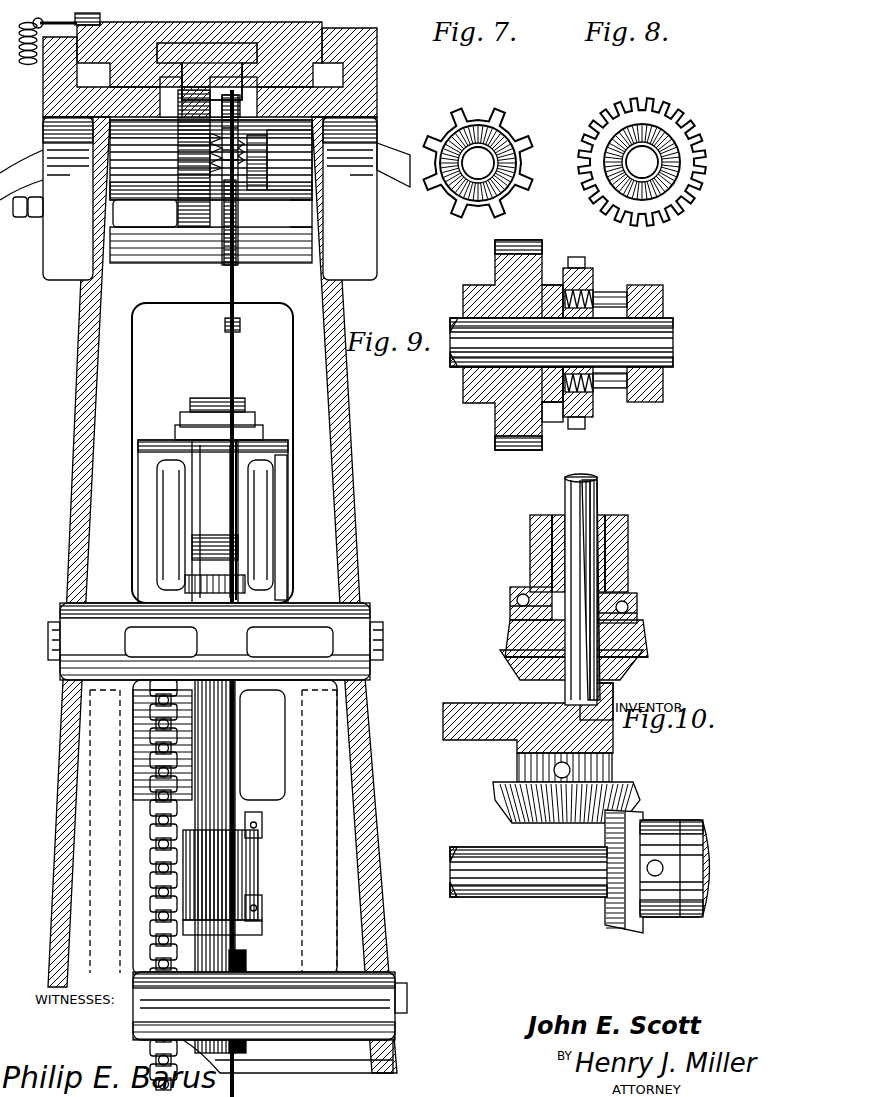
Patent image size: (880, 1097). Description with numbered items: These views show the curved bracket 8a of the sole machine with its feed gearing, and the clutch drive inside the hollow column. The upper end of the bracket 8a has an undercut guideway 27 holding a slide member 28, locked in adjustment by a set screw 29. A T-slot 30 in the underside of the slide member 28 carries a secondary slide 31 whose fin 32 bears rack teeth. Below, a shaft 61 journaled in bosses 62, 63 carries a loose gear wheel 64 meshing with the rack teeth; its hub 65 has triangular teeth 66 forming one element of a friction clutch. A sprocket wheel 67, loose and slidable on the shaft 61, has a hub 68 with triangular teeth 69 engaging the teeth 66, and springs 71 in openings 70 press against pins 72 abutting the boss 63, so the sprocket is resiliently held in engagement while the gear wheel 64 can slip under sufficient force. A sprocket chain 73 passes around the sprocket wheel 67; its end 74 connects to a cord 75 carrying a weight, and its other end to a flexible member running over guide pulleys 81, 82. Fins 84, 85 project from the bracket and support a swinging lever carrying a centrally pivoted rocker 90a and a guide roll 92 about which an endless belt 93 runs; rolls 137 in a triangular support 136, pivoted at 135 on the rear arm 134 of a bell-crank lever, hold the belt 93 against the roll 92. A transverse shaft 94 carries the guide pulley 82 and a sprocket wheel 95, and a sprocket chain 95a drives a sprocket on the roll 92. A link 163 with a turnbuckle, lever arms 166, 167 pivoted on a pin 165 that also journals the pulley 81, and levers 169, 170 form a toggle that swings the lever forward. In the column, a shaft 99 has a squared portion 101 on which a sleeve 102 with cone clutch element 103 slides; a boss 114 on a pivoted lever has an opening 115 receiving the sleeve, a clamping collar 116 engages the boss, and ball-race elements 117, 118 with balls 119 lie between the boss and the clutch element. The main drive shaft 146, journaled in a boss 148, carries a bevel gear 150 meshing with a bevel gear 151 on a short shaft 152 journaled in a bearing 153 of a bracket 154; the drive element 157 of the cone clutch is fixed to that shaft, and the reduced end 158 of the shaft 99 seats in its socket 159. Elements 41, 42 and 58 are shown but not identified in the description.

In FIG. 6, the bracket 8a is at (80, 407).
In FIG. 6, the channel or guideway 27 is at (343, 74).
In FIG. 6, the slide member 28 is at (322, 21).
In FIG. 6, the set screw 29 is at (27, 206).
In FIG. 6, the T-slot 30 is at (248, 63).
In FIG. 6, the secondary slide 31 is at (213, 47).
In FIG. 6, the fin 32 is at (90, 13).
In FIG. 6, the knife blade 41 is at (398, 153).
In FIG. 6, the guard 42 is at (18, 160).
In FIG. 6, the spring 58 is at (25, 19).
In FIG. 6, the shaft 61 is at (60, 143).
In FIG. 9, the shaft 61 is at (673, 349).
In FIG. 6, the boss 62 is at (133, 198).
In FIG. 6, the boss 63 is at (297, 195).
In FIG. 9, the boss 63 is at (665, 306).
In FIG. 6, the gear wheel 64 is at (182, 142).
In FIG. 8, the gear wheel 64 is at (648, 97).
In FIG. 9, the gear wheel 64 is at (495, 268).
In FIG. 6, the hub 65 is at (210, 153).
In FIG. 8, the hub 65 is at (688, 168).
In FIG. 9, the hub 65 is at (545, 285).
In FIG. 6, the triangular teeth 66 is at (200, 168).
In FIG. 8, the triangular teeth 66 is at (665, 138).
In FIG. 6, the sprocket wheel 67 is at (225, 213).
In FIG. 7, the sprocket wheel 67 is at (478, 108).
In FIG. 9, the sprocket wheel 67 is at (580, 262).
In FIG. 7, the hub 68 is at (462, 203).
In FIG. 9, the hub 68 is at (558, 422).
In FIG. 6, the triangular teeth 69 is at (222, 175).
In FIG. 7, the triangular teeth 69 is at (490, 132).
In FIG. 9, the openings 70 is at (588, 280).
In FIG. 9, the compression springs 71 is at (597, 295).
In FIG. 6, the pins 72 is at (257, 187).
In FIG. 9, the pins 72 is at (625, 292).
In FIG. 6, the sprocket chain 73 is at (243, 250).
In FIG. 6, the end of chain 74 is at (238, 311).
In FIG. 6, the cord or flexible device 75 is at (238, 345).
In FIG. 6, the guide pulley 81 is at (247, 583).
In FIG. 6, the guide pulley 82 is at (246, 957).
In FIG. 6, the fin or bracket 84 is at (90, 815).
In FIG. 6, the fin or bracket 85 is at (340, 818).
In FIG. 6, the curved rocker 90a is at (240, 437).
In FIG. 6, the guide roll 92 is at (235, 866).
In FIG. 6, the endless belt or strap 93 is at (197, 398).
In FIG. 6, the transverse shaft 94 is at (408, 997).
In FIG. 6, the sprocket wheel 95 is at (157, 755).
In FIG. 6, the sprocket chain 95a is at (150, 724).
In FIG. 10, the shaft 99 is at (565, 493).
In FIG. 10, the squared portion 101 is at (605, 518).
In FIG. 10, the sleeve 102 is at (625, 553).
In FIG. 10, the cone clutch element 103 is at (638, 628).
In FIG. 10, the boss 114 is at (538, 550).
In FIG. 10, the central opening 115 is at (615, 576).
In FIG. 10, the clamping collar 116 is at (540, 518).
In FIG. 10, the upper ball race element 117 is at (517, 585).
In FIG. 10, the lower ball race element 118 is at (513, 608).
In FIG. 10, the antifriction balls 119 is at (517, 601).
In FIG. 6, the rear arm 134 is at (236, 1060).
In FIG. 6, the pivot 135 is at (257, 915).
In FIG. 6, the triangular support 136 is at (200, 883).
In FIG. 6, the roll 137 is at (233, 865).
In FIG. 10, the main drive shaft 146 is at (498, 846).
In FIG. 10, the boss 148 is at (683, 916).
In FIG. 10, the bevel gear wheel 150 is at (618, 928).
In FIG. 10, the bevel gear 151 is at (620, 793).
In FIG. 10, the short shaft 152 is at (612, 746).
In FIG. 10, the bearing 153 is at (615, 698).
In FIG. 10, the bracket 154 is at (475, 706).
In FIG. 10, the drive element of cone clutch 157 is at (645, 640).
In FIG. 10, the reduced lower end 158 is at (505, 665).
In FIG. 10, the socket 159 is at (518, 680).
In FIG. 6, the link 163 is at (207, 573).
In FIG. 6, the pin 165 is at (380, 630).
In FIG. 6, the lever arm 166 is at (267, 523).
In FIG. 6, the lever arm 167 is at (170, 508).
In FIG. 6, the lever 169 is at (287, 503).
In FIG. 6, the lever 170 is at (143, 485).